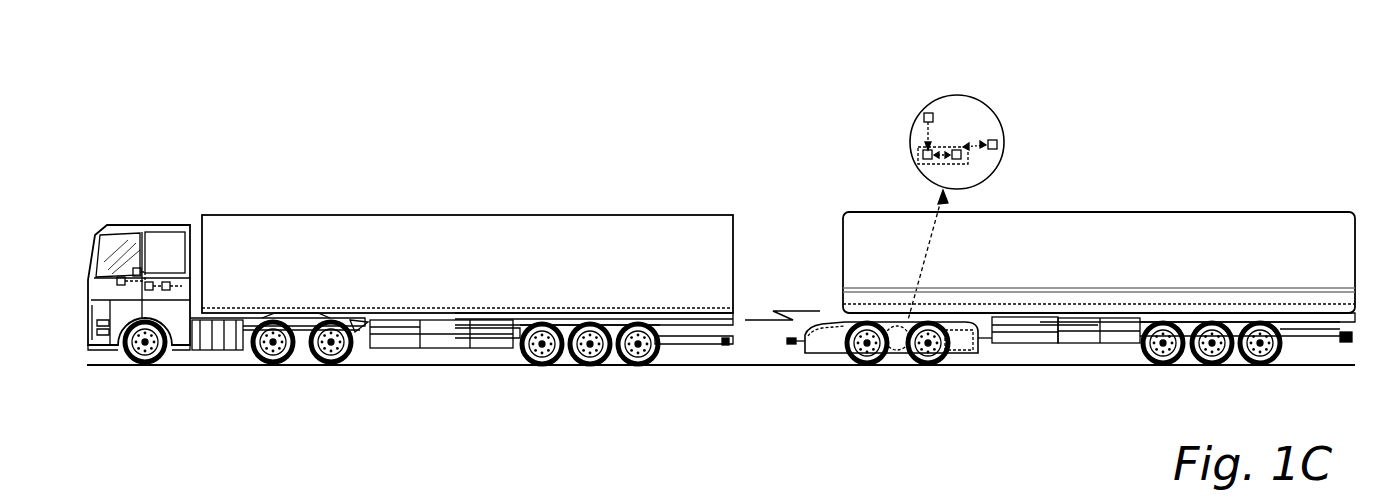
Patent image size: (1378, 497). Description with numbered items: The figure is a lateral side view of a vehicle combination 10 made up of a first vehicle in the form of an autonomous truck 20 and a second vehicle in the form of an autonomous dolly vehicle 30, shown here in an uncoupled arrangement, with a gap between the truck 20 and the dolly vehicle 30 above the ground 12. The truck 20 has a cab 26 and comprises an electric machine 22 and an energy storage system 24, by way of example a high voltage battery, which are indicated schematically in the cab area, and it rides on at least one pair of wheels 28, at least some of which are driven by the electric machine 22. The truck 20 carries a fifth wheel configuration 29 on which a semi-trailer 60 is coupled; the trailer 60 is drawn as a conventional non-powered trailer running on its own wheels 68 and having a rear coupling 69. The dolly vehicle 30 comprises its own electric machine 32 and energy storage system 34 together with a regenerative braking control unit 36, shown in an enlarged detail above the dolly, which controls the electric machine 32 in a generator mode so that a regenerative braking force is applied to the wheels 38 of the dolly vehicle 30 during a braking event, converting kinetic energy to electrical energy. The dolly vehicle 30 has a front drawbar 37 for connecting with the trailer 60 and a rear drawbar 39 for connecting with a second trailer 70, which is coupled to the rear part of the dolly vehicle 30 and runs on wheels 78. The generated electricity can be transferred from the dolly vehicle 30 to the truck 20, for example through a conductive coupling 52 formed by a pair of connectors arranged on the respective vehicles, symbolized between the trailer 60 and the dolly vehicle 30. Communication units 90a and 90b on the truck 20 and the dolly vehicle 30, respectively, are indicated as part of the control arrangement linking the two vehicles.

The vehicle combination 10 is at (108, 147).
The road surface 12 is at (721, 431).
The autonomous truck 20 is at (79, 231).
The electric machine 22 is at (152, 282).
The energy storage system 24 is at (170, 288).
The cab 26 is at (97, 243).
The pair of wheels 28 is at (146, 364).
The fifth wheel configuration 29 is at (296, 313).
The autonomous dolly vehicle 30 is at (827, 357).
The electric machine 32 is at (922, 155).
The energy storage system 34 is at (958, 150).
The regenerative braking control unit 36 is at (922, 117).
The front drawbar 37 is at (797, 346).
The pair of wheels 38 is at (928, 367).
The rear drawbar 39 is at (980, 347).
The conductive coupling 52 is at (787, 306).
The semi-trailer 60 is at (505, 232).
The wheels 68 is at (590, 368).
The first trailer rear coupling 69 is at (727, 347).
The second trailer 70 is at (1172, 232).
The wheels 78 is at (1260, 367).
The tractor communication unit 90a is at (137, 268).
The dolly communication unit 90b is at (997, 143).